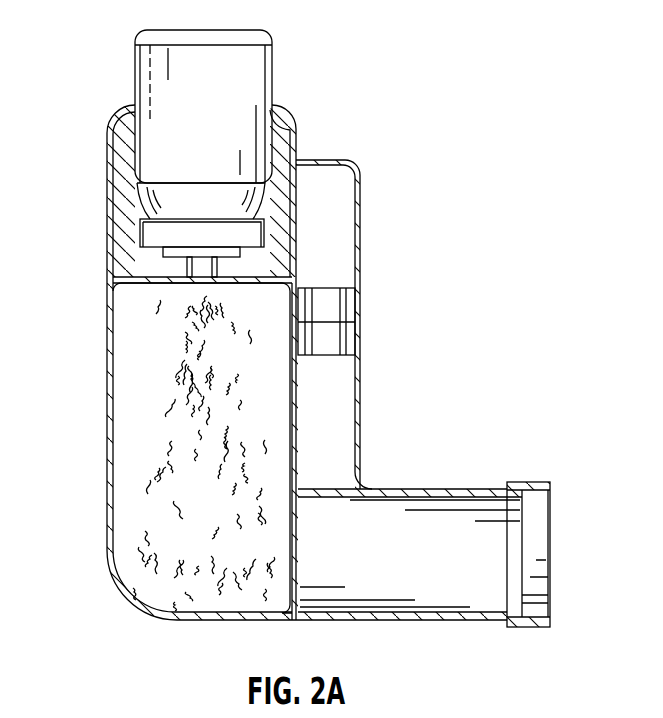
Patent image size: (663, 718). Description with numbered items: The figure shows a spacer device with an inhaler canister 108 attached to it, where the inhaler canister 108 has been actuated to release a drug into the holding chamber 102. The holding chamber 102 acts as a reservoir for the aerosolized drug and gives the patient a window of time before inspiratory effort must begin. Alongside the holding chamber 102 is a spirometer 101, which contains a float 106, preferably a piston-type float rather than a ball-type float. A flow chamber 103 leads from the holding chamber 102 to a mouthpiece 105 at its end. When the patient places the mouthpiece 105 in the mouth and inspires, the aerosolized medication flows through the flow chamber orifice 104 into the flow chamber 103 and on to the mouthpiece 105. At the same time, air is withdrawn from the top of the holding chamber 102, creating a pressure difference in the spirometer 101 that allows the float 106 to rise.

The spirometer 101 is at (336, 240).
The holding chamber 102 is at (125, 503).
The flow chamber 103 is at (434, 523).
The flow chamber orifice 104 is at (280, 600).
The mouthpiece 105 is at (527, 483).
The float 106 is at (326, 310).
The inhaler canister 108 is at (250, 87).